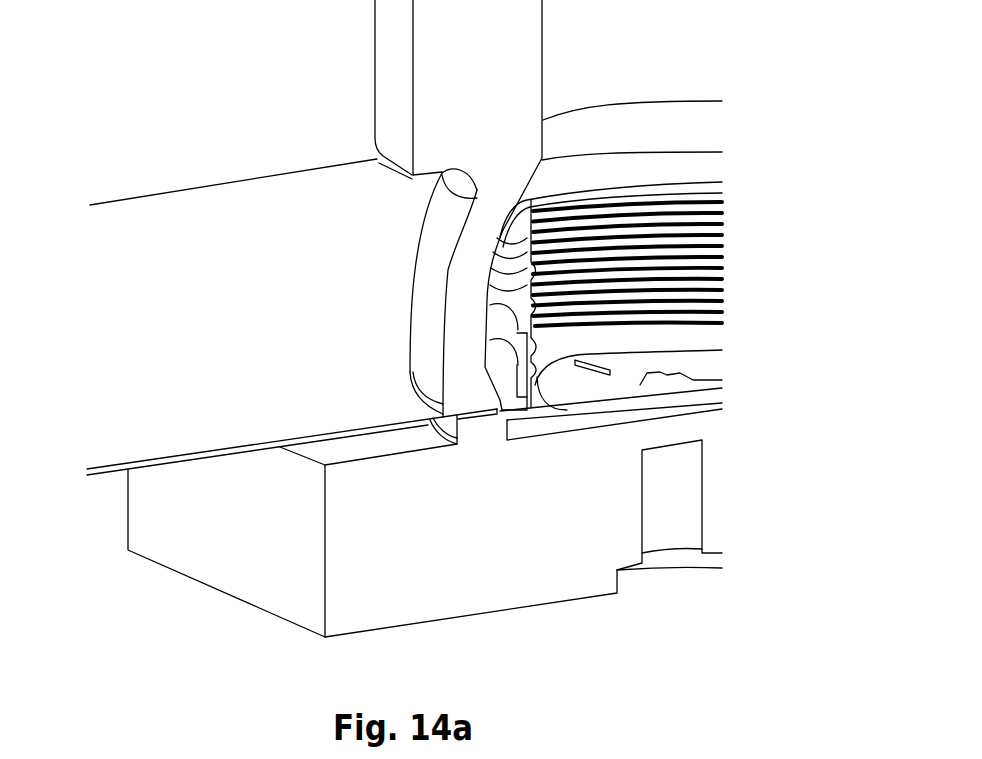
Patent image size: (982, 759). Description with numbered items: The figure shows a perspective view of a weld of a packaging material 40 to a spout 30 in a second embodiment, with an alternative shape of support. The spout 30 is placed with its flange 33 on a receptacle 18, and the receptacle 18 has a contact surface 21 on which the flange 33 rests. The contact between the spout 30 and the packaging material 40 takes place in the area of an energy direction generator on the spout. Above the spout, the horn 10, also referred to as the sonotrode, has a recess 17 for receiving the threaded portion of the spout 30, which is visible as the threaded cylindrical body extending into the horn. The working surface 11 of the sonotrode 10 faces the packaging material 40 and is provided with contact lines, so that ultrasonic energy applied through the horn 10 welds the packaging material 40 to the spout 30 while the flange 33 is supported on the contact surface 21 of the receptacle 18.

The horn 10 is at (435, 43).
The working surface 11 is at (467, 407).
The recess 17 is at (672, 77).
The receptacle 18 is at (695, 432).
The contact surface 21 is at (484, 423).
The spout 30 is at (715, 337).
The flange 33 is at (502, 420).
The packaging material 40 is at (190, 452).